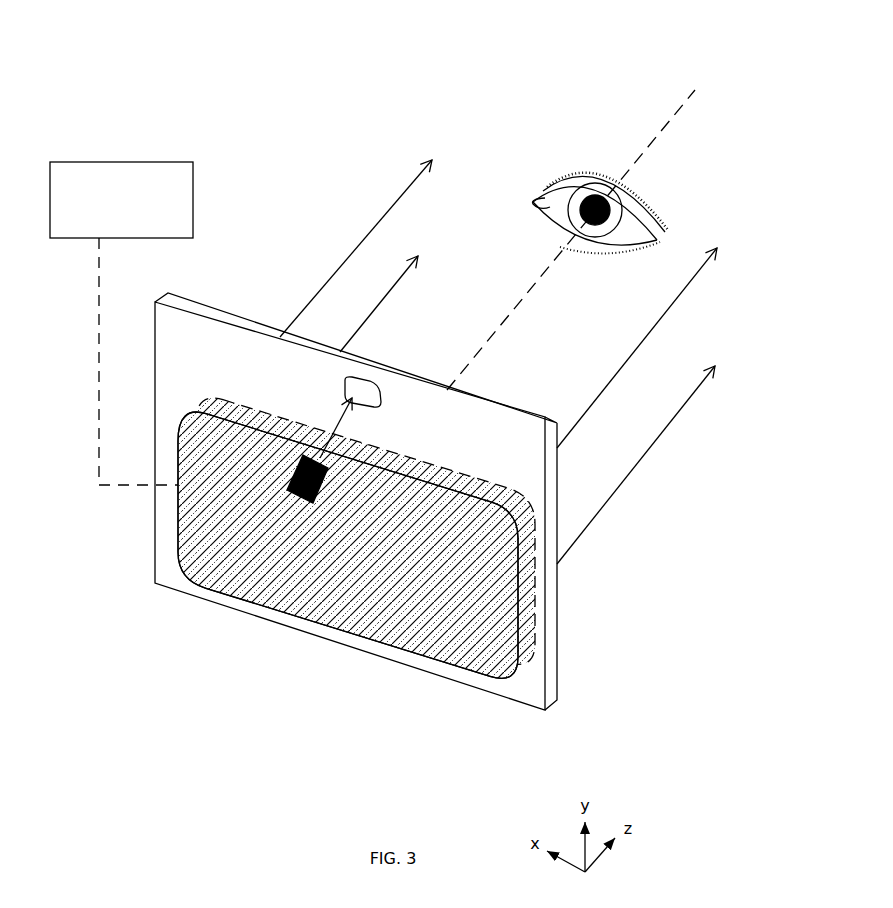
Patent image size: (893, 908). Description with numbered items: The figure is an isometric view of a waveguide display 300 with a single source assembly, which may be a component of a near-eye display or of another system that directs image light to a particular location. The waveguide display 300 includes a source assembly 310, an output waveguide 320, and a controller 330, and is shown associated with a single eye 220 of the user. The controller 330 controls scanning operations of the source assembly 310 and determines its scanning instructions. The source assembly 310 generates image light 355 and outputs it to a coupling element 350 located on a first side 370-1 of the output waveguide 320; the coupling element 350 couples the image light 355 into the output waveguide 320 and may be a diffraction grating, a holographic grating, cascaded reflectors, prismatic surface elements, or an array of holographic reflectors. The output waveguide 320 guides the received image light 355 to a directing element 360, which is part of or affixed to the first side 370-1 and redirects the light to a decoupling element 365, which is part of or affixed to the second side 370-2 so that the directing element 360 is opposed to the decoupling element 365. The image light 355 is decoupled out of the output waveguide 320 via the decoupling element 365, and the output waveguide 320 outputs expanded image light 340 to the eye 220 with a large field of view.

The waveguide display 300 is at (156, 66).
The controller 330 is at (170, 323).
The output waveguide 320 is at (437, 546).
The first side 370-1 is at (533, 690).
The second side 370-2 is at (557, 587).
The decoupling element 365 is at (535, 648).
The directing element 360 is at (223, 580).
The source assembly 310 is at (292, 475).
The image light 355 is at (323, 452).
The coupling element 350 is at (383, 394).
The expanded image light 340 is at (395, 193).
The eye 220 is at (571, 240).